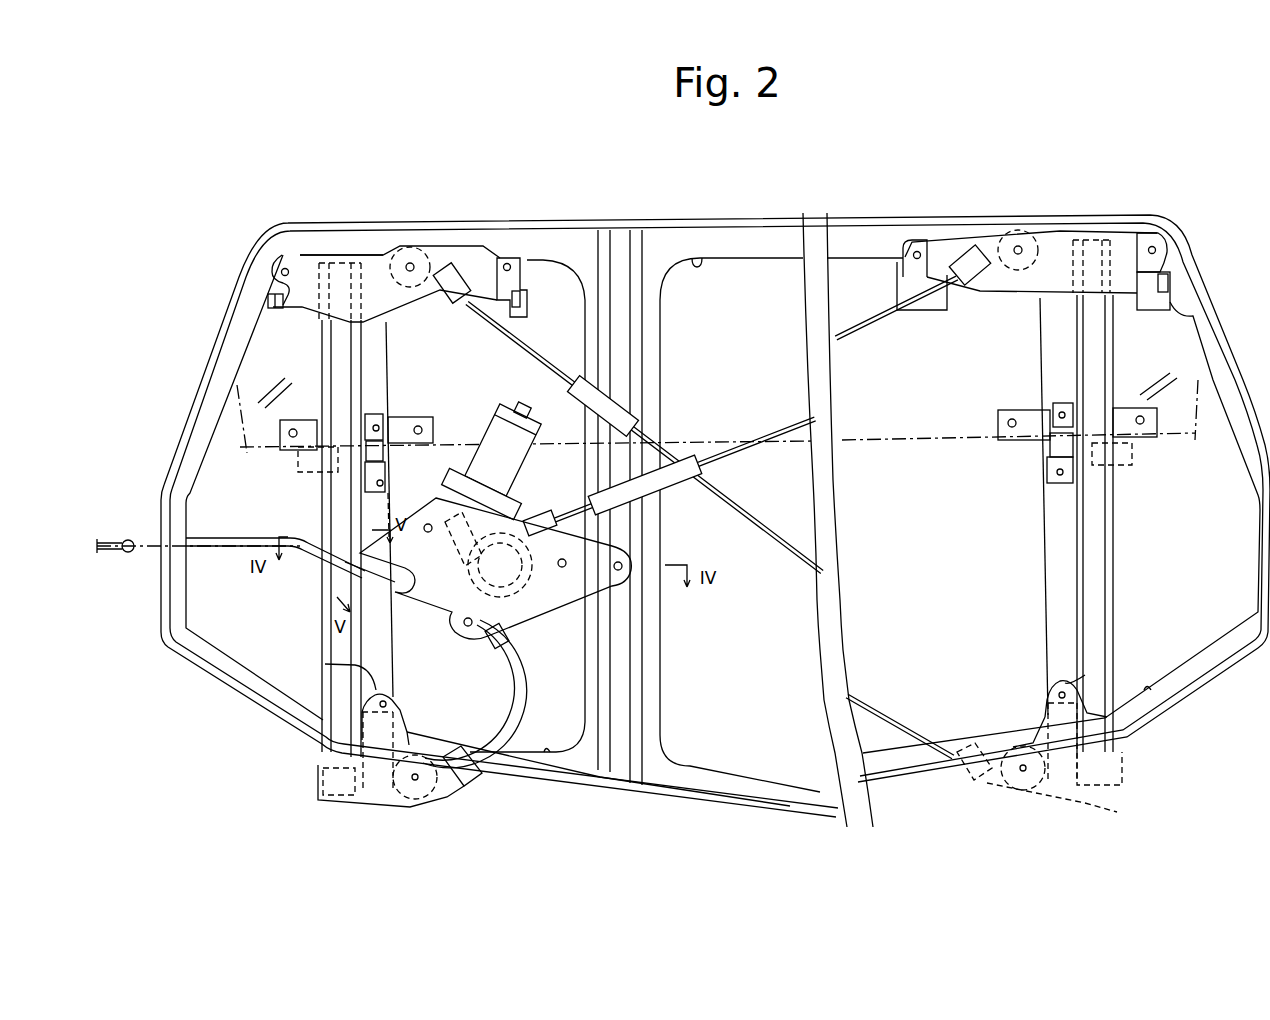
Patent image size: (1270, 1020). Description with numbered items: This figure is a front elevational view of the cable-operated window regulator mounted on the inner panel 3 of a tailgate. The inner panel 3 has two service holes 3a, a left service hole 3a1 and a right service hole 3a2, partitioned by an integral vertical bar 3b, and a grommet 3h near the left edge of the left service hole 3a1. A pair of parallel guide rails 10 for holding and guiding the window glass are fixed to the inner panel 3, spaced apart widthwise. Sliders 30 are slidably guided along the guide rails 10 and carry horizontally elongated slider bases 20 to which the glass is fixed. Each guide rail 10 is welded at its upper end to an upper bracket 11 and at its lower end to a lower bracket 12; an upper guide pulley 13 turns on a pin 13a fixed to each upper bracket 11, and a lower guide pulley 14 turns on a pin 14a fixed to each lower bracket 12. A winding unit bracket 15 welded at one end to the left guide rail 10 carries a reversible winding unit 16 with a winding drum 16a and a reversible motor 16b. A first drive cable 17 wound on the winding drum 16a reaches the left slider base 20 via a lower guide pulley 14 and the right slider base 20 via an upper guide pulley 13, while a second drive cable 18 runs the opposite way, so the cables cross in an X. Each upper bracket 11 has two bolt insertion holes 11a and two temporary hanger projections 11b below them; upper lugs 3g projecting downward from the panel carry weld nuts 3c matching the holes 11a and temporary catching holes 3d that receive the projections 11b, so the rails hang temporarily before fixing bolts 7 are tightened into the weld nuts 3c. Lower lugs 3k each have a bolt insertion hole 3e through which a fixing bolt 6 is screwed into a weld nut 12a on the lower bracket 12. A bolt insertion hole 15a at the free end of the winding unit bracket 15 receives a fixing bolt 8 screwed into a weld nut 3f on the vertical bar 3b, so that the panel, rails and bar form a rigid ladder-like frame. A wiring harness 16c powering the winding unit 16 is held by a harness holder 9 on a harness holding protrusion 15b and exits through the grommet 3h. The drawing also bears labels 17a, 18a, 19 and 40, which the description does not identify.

The inner panel 3 is at (771, 232).
The service holes 3a is at (723, 493).
The left service hole 3a1 is at (544, 256).
The right service hole 3a2 is at (1150, 690).
The vertical bar 3b is at (623, 366).
The weld nuts 3c is at (282, 264).
The temporary catching holes 3d is at (1150, 311).
The bolt insertion hole 3e is at (1058, 695).
The weld nut 3f is at (630, 568).
The upper lugs 3g is at (318, 255).
The grommet 3h is at (128, 553).
The lower lugs 3k is at (325, 664).
The fixing bolt 6 is at (734, 717).
The fixing bolt 7 is at (707, 235).
The fixing bolt 8 is at (686, 603).
The harness holder 9 is at (340, 584).
The guide rails 10 is at (347, 332).
The upper bracket 11 is at (341, 254).
The bolt insertion holes 11a is at (707, 247).
The temporary hanger projections 11b is at (715, 320).
The lower bracket 12 is at (376, 801).
The weld nut 12a is at (734, 729).
The upper guide pulley 13 is at (413, 248).
The pin 13a is at (388, 250).
The lower guide pulley 14 is at (723, 795).
The pin 14a is at (415, 781).
The winding unit bracket 15 is at (552, 573).
The bolt insertion hole 15a is at (618, 566).
The harness holding protrusion 15b is at (452, 612).
The reversible winding unit 16 is at (401, 494).
The winding drum 16a is at (528, 516).
The reversible motor 16b is at (522, 452).
The wiring harness 16c is at (224, 549).
The first drive cable 17 is at (719, 474).
The wire portion 17a is at (845, 331).
The second drive cable 18 is at (717, 506).
The arm portion 18a is at (951, 506).
The guide slider 19 is at (372, 425).
The slider bases 20 is at (397, 406).
The sliders 30 is at (327, 463).
The slider 40 is at (388, 440).